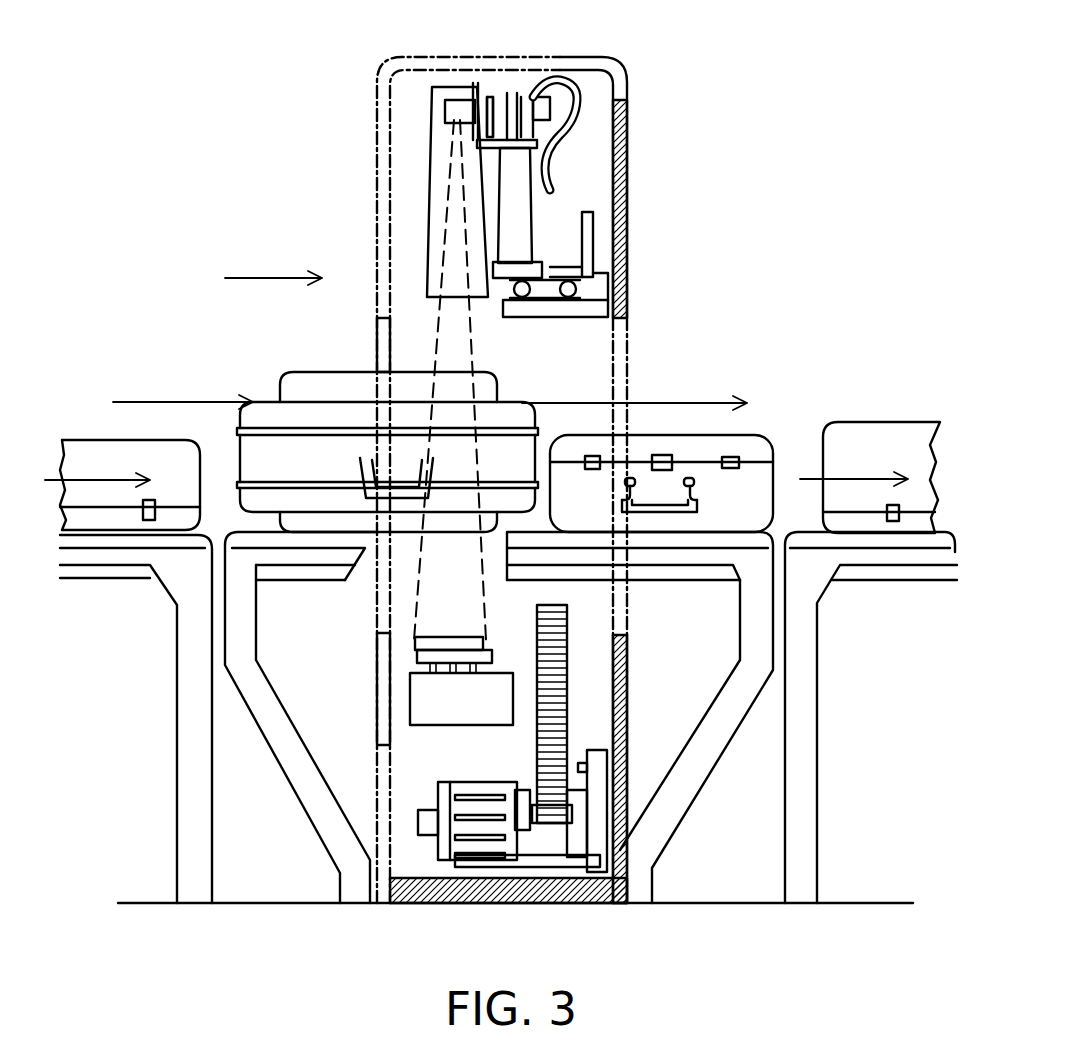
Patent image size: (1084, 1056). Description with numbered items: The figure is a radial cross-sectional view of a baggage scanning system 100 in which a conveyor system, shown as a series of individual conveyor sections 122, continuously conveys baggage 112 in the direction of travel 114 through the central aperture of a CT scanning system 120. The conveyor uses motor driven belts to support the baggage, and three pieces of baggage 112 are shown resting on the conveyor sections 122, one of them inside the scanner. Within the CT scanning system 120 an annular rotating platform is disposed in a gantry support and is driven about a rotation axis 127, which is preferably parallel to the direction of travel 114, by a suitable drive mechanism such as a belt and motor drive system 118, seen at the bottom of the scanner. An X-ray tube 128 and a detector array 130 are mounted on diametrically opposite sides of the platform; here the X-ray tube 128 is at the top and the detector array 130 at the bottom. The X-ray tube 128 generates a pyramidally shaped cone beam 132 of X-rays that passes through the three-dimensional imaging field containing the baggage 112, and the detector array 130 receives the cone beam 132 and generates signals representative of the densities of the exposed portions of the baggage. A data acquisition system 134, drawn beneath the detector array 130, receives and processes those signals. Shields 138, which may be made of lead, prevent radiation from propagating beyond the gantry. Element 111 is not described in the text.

The baggage scanning system 100 is at (800, 958).
The support frame 111 is at (573, 708).
The baggage 112 is at (337, 372).
The direction of travel 114 is at (267, 278).
The motor drive system 118 is at (505, 862).
The CT scanning system 120 is at (460, 57).
The conveyor section 122 is at (817, 707).
The rotation axis 127 is at (172, 400).
The X-ray tube 128 is at (507, 97).
The detector array 130 is at (440, 636).
The cone beam 132 is at (480, 358).
The data acquisition system 134 is at (410, 722).
The shields 138 is at (420, 652).